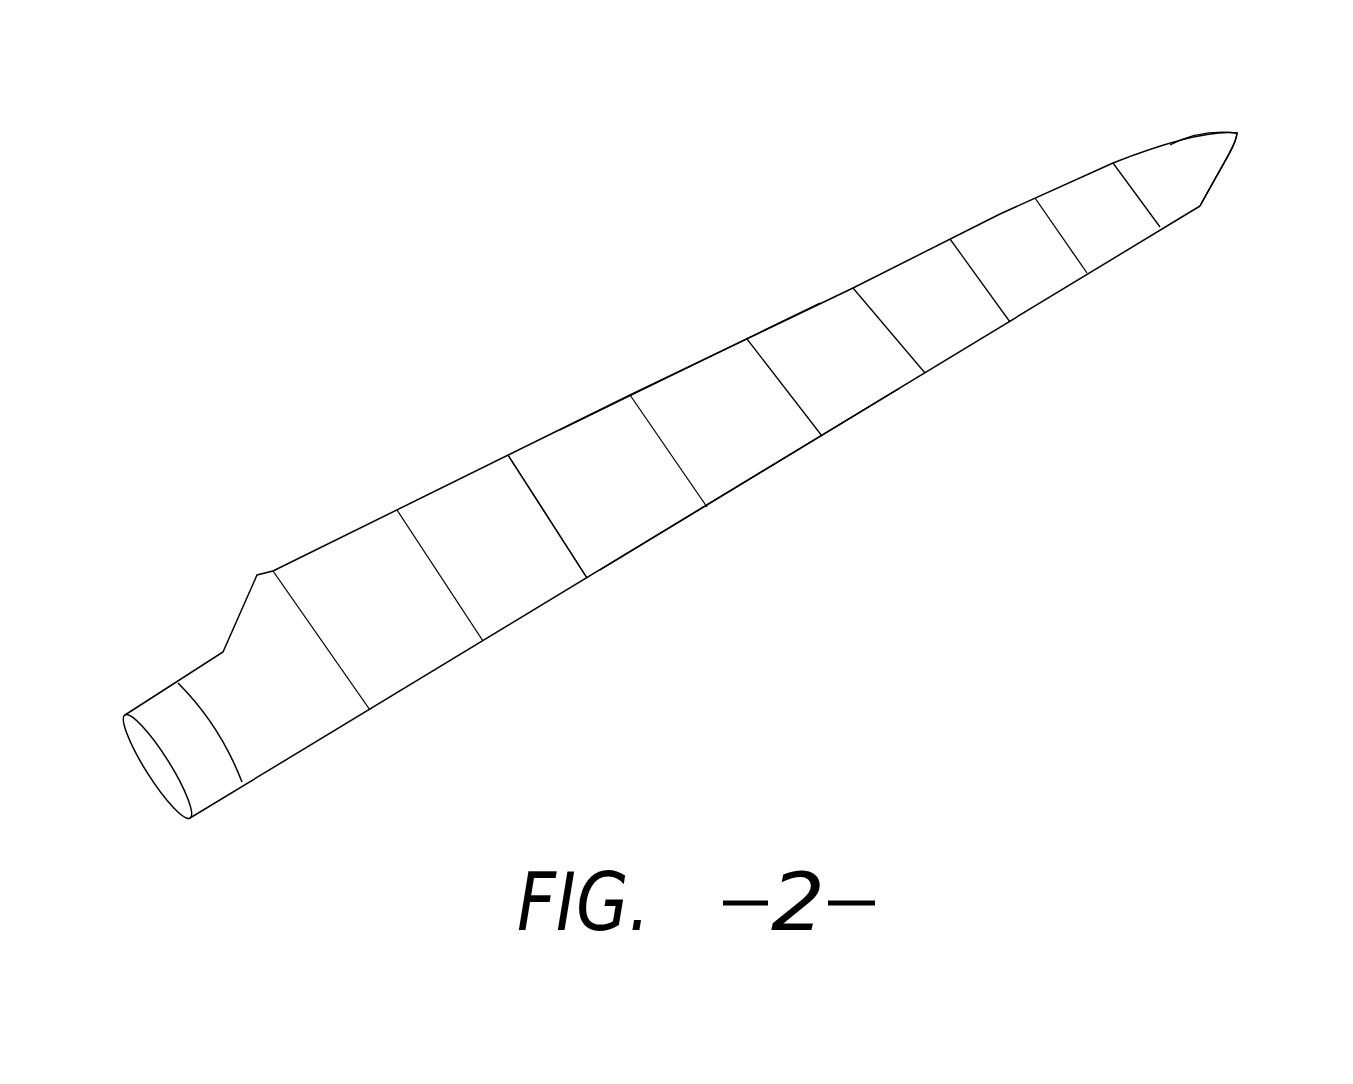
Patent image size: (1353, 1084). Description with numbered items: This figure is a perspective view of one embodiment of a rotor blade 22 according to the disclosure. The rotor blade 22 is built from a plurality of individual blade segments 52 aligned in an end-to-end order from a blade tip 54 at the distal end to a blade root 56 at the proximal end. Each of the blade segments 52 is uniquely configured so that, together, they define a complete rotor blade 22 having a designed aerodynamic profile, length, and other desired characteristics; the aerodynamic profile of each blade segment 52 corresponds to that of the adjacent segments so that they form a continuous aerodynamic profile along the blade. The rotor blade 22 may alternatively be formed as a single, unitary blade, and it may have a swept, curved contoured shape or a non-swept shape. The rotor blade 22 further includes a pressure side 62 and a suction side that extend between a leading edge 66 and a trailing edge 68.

The rotor blade 22 is at (553, 352).
The blade segments 52 is at (320, 725).
The blade tip 54 is at (1240, 132).
The blade root 56 is at (146, 773).
The pressure side 62 is at (593, 473).
The leading edge 66 is at (752, 482).
The trailing edge 68 is at (692, 360).